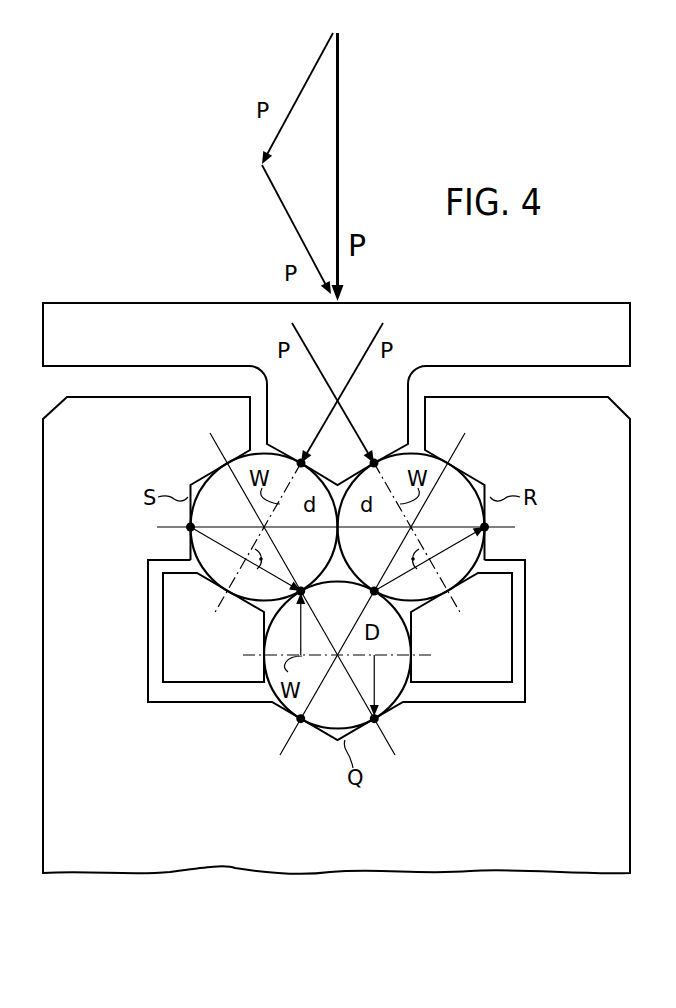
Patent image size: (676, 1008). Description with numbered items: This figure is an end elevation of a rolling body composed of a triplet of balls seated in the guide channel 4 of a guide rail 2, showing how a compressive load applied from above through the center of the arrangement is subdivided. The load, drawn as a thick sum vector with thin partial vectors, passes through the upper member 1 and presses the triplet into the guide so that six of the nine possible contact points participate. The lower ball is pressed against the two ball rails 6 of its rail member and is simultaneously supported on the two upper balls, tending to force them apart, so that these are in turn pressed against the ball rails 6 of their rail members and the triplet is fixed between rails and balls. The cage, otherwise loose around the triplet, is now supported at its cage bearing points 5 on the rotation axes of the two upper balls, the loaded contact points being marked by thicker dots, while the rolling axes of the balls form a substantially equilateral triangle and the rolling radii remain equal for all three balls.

The pressure beam / thrust member 1 is at (103, 316).
The guide rail 2 is at (101, 851).
The guide channel 4 is at (171, 701).
The cage bearing points 5 is at (300, 458).
The ball rails 6 is at (183, 535).